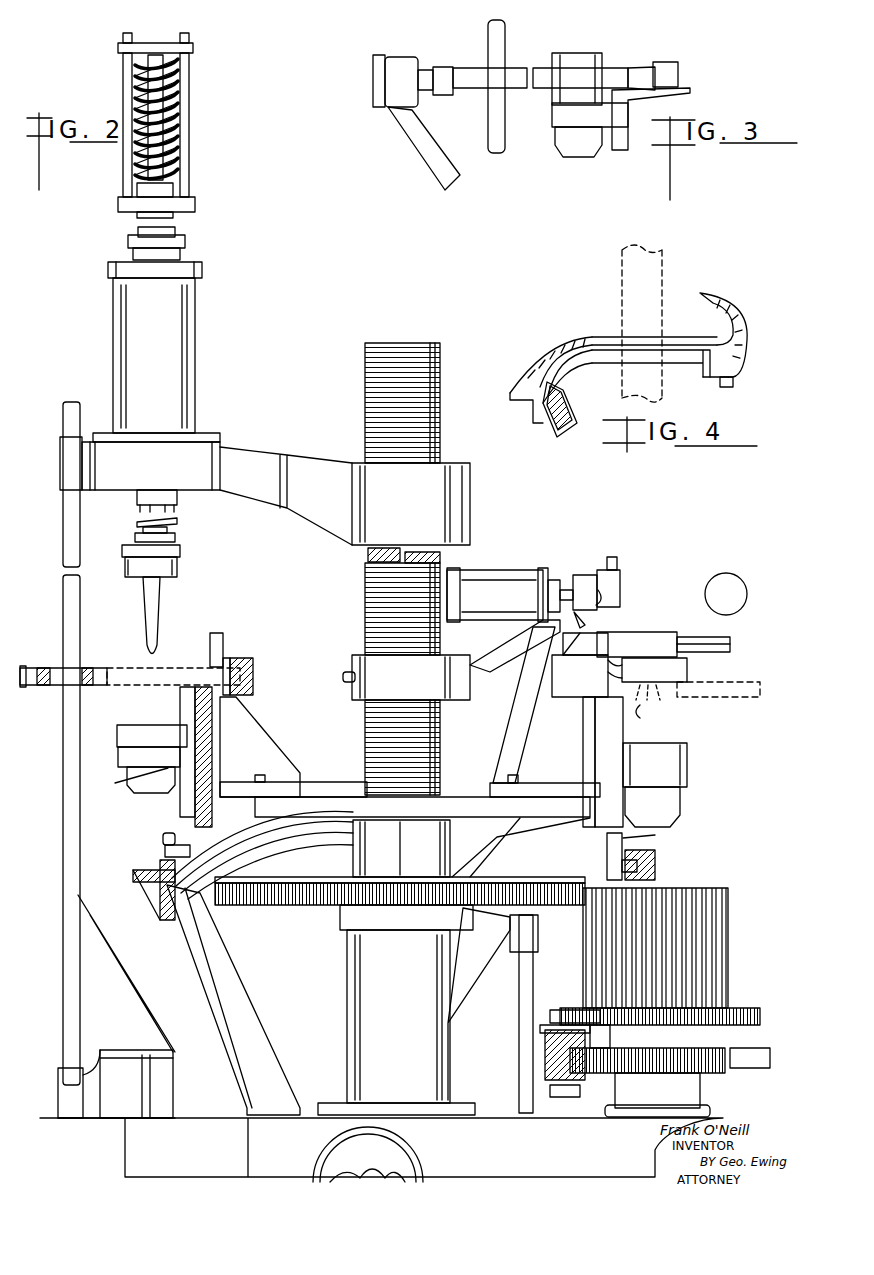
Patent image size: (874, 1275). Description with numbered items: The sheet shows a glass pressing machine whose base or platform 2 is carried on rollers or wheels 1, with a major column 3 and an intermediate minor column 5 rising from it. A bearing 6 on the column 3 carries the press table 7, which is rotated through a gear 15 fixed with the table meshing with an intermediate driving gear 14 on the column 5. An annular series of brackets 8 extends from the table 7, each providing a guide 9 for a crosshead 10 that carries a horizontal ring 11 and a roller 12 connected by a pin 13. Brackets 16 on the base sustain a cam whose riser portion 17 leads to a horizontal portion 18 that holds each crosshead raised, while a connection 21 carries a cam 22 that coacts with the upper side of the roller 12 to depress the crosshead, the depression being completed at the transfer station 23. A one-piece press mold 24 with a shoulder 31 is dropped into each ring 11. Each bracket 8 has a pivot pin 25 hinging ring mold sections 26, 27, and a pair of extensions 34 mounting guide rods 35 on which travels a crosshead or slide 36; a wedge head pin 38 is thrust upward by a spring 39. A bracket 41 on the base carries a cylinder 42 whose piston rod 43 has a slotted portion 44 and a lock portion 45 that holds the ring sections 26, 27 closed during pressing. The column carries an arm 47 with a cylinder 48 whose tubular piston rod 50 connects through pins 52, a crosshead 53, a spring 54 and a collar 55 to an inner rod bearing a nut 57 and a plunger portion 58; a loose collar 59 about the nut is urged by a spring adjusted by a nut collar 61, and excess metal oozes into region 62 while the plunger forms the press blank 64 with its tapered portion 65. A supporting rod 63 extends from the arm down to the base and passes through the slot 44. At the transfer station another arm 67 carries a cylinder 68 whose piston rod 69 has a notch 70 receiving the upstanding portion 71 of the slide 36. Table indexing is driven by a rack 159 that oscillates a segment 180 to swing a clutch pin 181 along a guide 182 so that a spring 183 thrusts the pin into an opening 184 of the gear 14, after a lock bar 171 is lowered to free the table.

In FIG. 2, the rollers or wheels 1 is at (410, 1152).
In FIG. 2, the base or platform 2 is at (305, 1115).
In FIG. 2, the major column 3 is at (442, 388).
In FIG. 4, the major column 3 is at (665, 252).
In FIG. 2, the intermediate minor column 5 is at (690, 1042).
In FIG. 2, the bearing 6 is at (330, 895).
In FIG. 2, the press table 7 is at (328, 826).
In FIG. 2, the brackets 8 is at (300, 783).
In FIG. 2, the guides 9 is at (190, 685).
In FIG. 3, the guides 9 is at (640, 75).
In FIG. 2, the crosshead 10 is at (388, 805).
In FIG. 3, the crosshead 10 is at (670, 105).
In FIG. 2, the horizontal ring 11 is at (118, 755).
In FIG. 3, the horizontal ring 11 is at (552, 118).
In FIG. 2, the roller 12 is at (160, 838).
In FIG. 2, the pin 13 is at (163, 852).
In FIG. 2, the intermediate driving gear 14 is at (730, 960).
In FIG. 2, the gear 15 is at (258, 905).
In FIG. 2, the brackets 16 is at (255, 1000).
In FIG. 4, the brackets 16 is at (665, 386).
In FIG. 2, the riser portion 17 is at (232, 805).
In FIG. 4, the riser portion 17 is at (545, 355).
In FIG. 4, the horizontal portion 18 is at (655, 335).
In FIG. 4, the connection 21 is at (748, 340).
In FIG. 2, the cam 22 is at (605, 850).
In FIG. 4, the cam 22 is at (748, 310).
In FIG. 2, the transfer station 23 is at (726, 594).
In FIG. 2, the one-piece press mold 24 is at (152, 795).
In FIG. 3, the one-piece press mold 24 is at (575, 158).
In FIG. 2, the pivot pin 25 is at (250, 680).
In FIG. 3, the pivot pin 25 is at (678, 64).
In FIG. 2, the ring mold section 26 is at (688, 670).
In FIG. 3, the ring mold section 26 is at (645, 66).
In FIG. 3, the ring mold section 27 is at (580, 72).
In FIG. 2, the shoulder 31 is at (125, 740).
In FIG. 2, the extensions 34 is at (600, 670).
In FIG. 2, the guide rod 35 is at (731, 641).
In FIG. 2, the crosshead or slide 36 is at (630, 633).
In FIG. 2, the wedge head pin 38 is at (618, 561).
In FIG. 2, the spring 39 is at (595, 565).
In FIG. 2, the bracket 41 is at (128, 975).
In FIG. 3, the bracket 41 is at (418, 143).
In FIG. 3, the cylinder 42 is at (378, 108).
In FIG. 2, the piston rod 43 is at (40, 665).
In FIG. 3, the piston rod 43 is at (447, 95).
In FIG. 2, the slotted portion 44 is at (44, 688).
In FIG. 3, the slotted portion 44 is at (460, 68).
In FIG. 2, the clamp or lock portion 45 is at (110, 665).
In FIG. 3, the clamp or lock portion 45 is at (535, 58).
In FIG. 2, the arm 47 is at (285, 460).
In FIG. 2, the cylinder 48 is at (197, 302).
In FIG. 2, the tubular piston rod 50 is at (178, 232).
In FIG. 2, the pins 52 is at (160, 50).
In FIG. 2, the crosshead 53 is at (194, 47).
In FIG. 2, the spring 54 is at (186, 63).
In FIG. 2, the collar 55 is at (190, 185).
In FIG. 2, the nut 57 is at (177, 538).
In FIG. 2, the plunger portion 58 is at (181, 566).
In FIG. 2, the loose collar 59 is at (178, 582).
In FIG. 2, the nut collar 61 is at (178, 520).
In FIG. 2, the region 62 is at (180, 500).
In FIG. 2, the supporting rod 63 is at (62, 752).
In FIG. 3, the supporting rod 63 is at (492, 150).
In FIG. 2, the press blank 64 is at (658, 702).
In FIG. 2, the central orifice or tapered portion 65 is at (644, 718).
In FIG. 2, the arm 67 is at (480, 668).
In FIG. 2, the cylinder 68 is at (535, 572).
In FIG. 2, the piston rod 69 is at (572, 568).
In FIG. 2, the notch 70 is at (600, 600).
In FIG. 2, the upstanding portion 71 is at (576, 620).
In FIG. 2, the rack 159 is at (760, 1070).
In FIG. 2, the lock bar 171 is at (536, 955).
In FIG. 2, the segment 180 is at (705, 1073).
In FIG. 2, the clutch pin 181 is at (560, 1100).
In FIG. 2, the guide 182 is at (625, 1105).
In FIG. 2, the spring 183 is at (543, 1058).
In FIG. 2, the opening 184 is at (552, 1010).